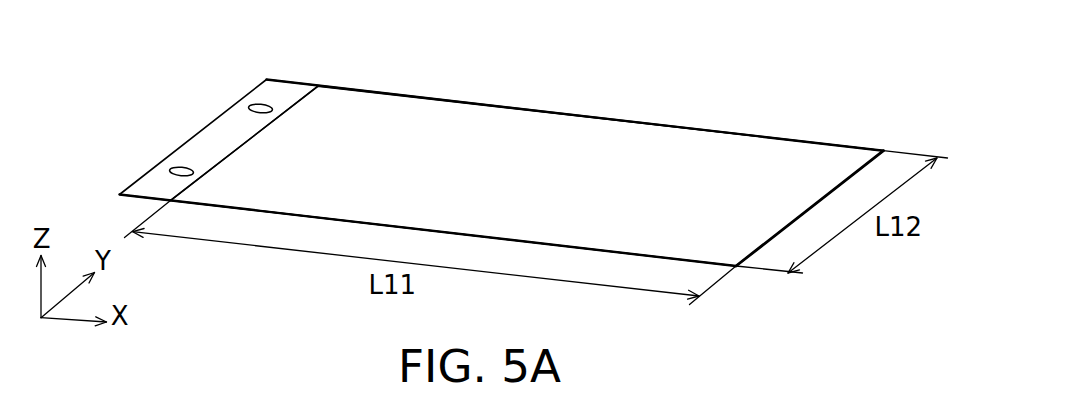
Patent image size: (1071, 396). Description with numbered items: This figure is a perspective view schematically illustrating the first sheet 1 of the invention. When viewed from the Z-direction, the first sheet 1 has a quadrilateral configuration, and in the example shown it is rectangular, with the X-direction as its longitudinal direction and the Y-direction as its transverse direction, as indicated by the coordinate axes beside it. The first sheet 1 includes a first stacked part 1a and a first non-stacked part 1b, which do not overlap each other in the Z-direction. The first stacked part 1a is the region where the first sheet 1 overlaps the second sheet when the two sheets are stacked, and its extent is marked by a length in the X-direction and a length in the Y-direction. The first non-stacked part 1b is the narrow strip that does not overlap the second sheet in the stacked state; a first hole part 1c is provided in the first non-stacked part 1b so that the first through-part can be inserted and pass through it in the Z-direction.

The first sheet 1 is at (812, 120).
The first stacked part 1a is at (538, 134).
The first non-stacked part 1b is at (277, 95).
The first hole part 1c is at (172, 170).